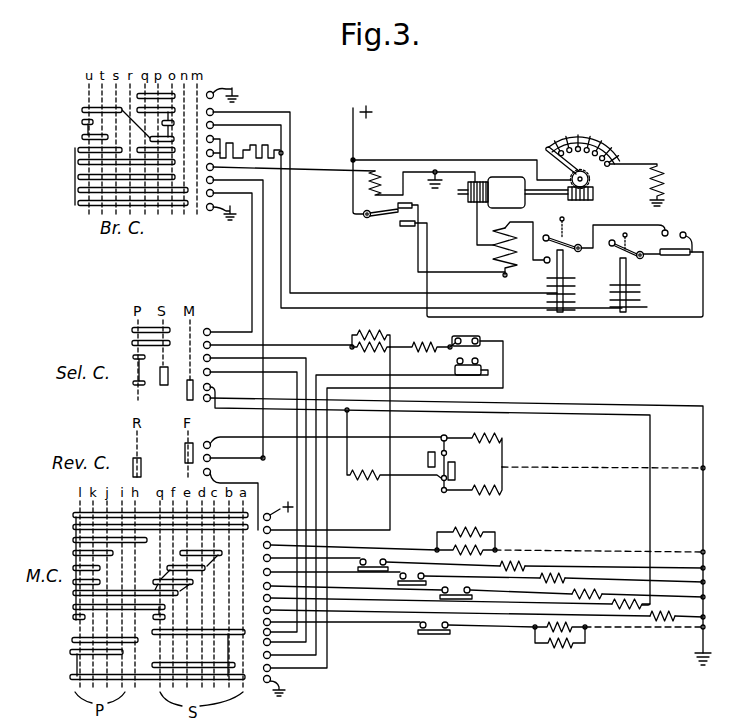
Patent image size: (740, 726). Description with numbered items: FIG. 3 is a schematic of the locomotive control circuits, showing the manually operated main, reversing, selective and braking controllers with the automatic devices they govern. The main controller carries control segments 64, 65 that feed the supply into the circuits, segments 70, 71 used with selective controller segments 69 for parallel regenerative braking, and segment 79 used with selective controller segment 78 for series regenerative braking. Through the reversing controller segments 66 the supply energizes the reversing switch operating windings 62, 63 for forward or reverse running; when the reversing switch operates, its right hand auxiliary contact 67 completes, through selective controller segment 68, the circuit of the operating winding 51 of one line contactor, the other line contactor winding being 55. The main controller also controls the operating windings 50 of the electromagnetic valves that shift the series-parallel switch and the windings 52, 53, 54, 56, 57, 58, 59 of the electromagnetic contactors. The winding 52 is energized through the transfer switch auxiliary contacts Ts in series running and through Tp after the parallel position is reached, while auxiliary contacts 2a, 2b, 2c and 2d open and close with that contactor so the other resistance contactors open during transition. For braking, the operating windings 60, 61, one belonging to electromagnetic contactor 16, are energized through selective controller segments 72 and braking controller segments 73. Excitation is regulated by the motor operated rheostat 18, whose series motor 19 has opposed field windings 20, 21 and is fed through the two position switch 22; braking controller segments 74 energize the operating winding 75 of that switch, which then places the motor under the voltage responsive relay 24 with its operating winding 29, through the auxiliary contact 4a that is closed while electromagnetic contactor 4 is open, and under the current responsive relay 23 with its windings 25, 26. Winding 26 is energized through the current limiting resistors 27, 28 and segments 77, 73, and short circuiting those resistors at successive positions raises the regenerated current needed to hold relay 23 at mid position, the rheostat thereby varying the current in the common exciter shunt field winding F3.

The electromagnetic contactor 16 is at (82, 110).
The contact segment of controller Br. C. 77 is at (82, 137).
The contact segments of controller Br. C. 74 is at (75, 168).
The contact segments of controller Br. C. 73 is at (75, 202).
The current limiting resistor 27 is at (230, 143).
The current limiting resistor 28 is at (265, 145).
The operating winding of switch 22 75 is at (384, 170).
The two position switch 22 is at (386, 225).
The operating motor of the rheostat 19 is at (513, 211).
The motor operated rheostat 18 is at (583, 167).
The field winding of motor 19 20 is at (533, 228).
The field winding of motor 19 21 is at (508, 270).
The electromagnetic contactor 4 is at (674, 248).
The auxiliary contact 4a is at (676, 256).
The current responsive relay 23 is at (562, 316).
The voltage responsive relay 24 is at (623, 316).
The operating winding of relay 23 25 is at (575, 283).
The winding of relay 23 26 is at (575, 302).
The operating winding of relay 24 29 is at (641, 294).
The contact segments of controller Sel. C. 72 is at (132, 343).
The contact segments of controller Sel. C. 69 is at (133, 360).
The contact segment of controller Sel. C. 78 is at (168, 372).
The contact segment of controller Sel. C. 68 is at (187, 390).
The contact segments of controller Rev. C. 66 is at (185, 455).
The operating winding of electromagnetic contactor 16 60 is at (364, 333).
The operating winding of electromagnetic contactor 17 61 is at (360, 349).
The operating winding of resistance controlling contactor 2 52 is at (428, 345).
The auxiliary contacts of the series-parallel transfer switch Ts is at (481, 340).
The auxiliary contact of the series-parallel transfer switch Tp is at (455, 370).
The operating winding of electromagnetic contactor 1 51 is at (361, 471).
The right hand auxiliary contact 67 is at (428, 458).
The operating winding of the reversing switch mechanism 62 is at (490, 437).
The operating winding of the reversing switch mechanism 63 is at (488, 493).
The control segment of controller M. C. 64 is at (73, 515).
The control segment of controller M. C. 65 is at (73, 527).
The contact segment of controller M. C. 79 is at (232, 631).
The contact segment of controller M. C. 70 is at (72, 640).
The contact segment of controller M. C. 71 is at (70, 677).
The operating windings of the electromagnetic valves 50 is at (455, 531).
The auxiliary contact of contactor 2 2d is at (373, 558).
The operating winding of a resistance controlling contactor 56 is at (522, 563).
The auxiliary contact of contactor 2 2c is at (412, 572).
The operating winding of a resistance controlling contactor 53 is at (560, 576).
The auxiliary contact of contactor 2 2b is at (456, 587).
The operating winding of a resistance controlling contactor 57 is at (597, 590).
The operating winding of line contactor 5 55 is at (627, 608).
The operating winding of electromagnetic contactor 9 59 is at (667, 622).
The auxiliary contact of contactor 2 2a is at (434, 622).
The operating winding of a resistance controlling contactor 54 is at (538, 630).
The operating winding of a resistance controlling contactor 58 is at (556, 647).
The exciter shunt field winding F3 is at (668, 187).